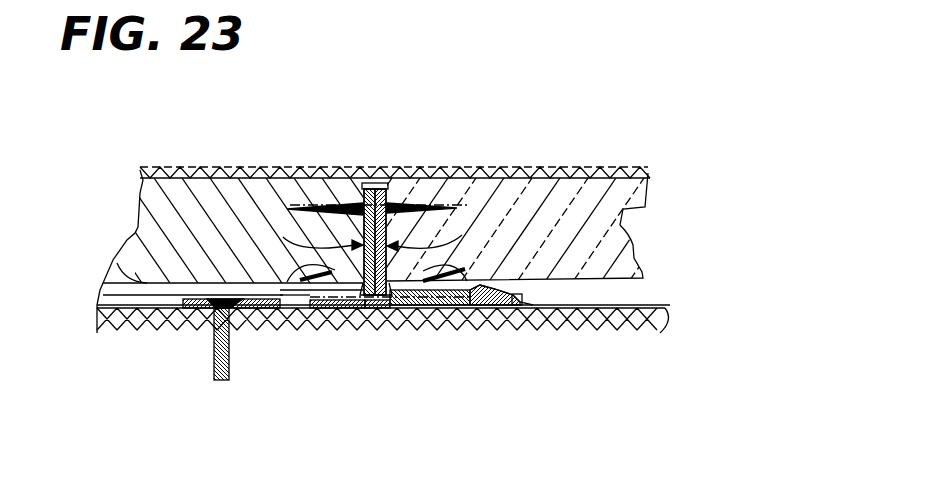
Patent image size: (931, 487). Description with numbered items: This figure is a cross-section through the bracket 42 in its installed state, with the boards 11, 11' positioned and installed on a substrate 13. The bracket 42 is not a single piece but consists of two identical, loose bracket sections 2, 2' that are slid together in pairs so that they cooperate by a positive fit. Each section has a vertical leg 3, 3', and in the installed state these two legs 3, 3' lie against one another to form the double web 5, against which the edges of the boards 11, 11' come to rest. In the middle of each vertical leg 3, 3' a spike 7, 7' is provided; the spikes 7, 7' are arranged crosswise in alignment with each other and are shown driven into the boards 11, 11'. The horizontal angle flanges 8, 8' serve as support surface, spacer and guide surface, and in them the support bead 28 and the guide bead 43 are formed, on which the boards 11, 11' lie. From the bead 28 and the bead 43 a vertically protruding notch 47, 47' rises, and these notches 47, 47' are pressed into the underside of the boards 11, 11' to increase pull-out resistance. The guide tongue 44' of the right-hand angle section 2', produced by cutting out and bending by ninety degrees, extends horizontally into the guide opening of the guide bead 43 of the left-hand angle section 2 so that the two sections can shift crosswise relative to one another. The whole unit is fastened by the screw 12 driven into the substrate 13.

The bracket section 2 is at (310, 235).
The bracket section 2' is at (437, 232).
The vertical leg 3 is at (359, 194).
The vertical leg 3' is at (422, 198).
The double web 5 is at (382, 166).
The spike 7 is at (325, 152).
The spike 7' is at (458, 152).
The angle flange 8 is at (226, 366).
The angle flange 8' is at (571, 350).
The board 11 is at (246, 188).
The board 11' is at (511, 188).
The screw 12 is at (215, 348).
The substrate 13 is at (648, 328).
The support bead 28 is at (470, 312).
The bracket 42 is at (396, 320).
The guide bead 43 is at (317, 306).
The guide tongue 44' is at (406, 353).
The notch 47 is at (321, 342).
The notch 47' is at (464, 337).